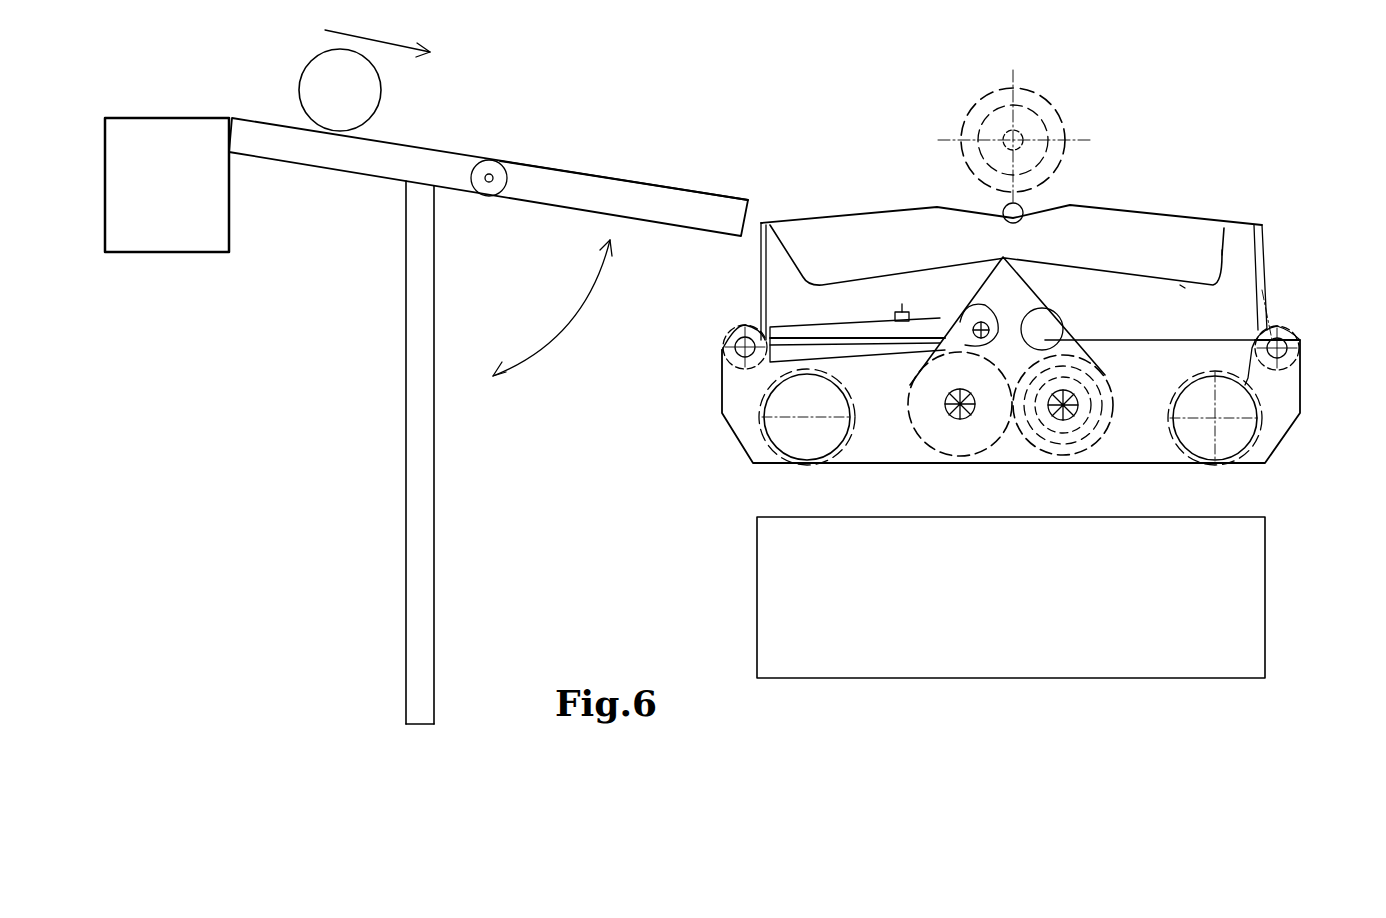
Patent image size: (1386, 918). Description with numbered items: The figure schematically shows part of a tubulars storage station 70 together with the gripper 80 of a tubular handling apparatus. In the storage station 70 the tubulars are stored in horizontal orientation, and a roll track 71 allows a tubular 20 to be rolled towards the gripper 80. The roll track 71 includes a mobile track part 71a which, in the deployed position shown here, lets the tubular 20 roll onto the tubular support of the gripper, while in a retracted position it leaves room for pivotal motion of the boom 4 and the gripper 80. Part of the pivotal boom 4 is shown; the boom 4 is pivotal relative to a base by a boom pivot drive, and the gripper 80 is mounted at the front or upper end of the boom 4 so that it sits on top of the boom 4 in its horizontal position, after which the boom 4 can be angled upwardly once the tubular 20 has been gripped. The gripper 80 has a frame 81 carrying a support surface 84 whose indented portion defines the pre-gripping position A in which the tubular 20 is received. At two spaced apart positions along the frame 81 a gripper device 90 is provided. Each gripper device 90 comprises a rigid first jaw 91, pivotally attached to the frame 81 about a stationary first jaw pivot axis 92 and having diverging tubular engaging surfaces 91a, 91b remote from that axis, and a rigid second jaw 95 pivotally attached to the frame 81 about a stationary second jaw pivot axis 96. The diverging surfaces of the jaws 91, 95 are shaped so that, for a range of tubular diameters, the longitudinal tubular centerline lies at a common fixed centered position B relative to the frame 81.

The pivotal boom 4 is at (1270, 600).
The tubular 20 is at (303, 72).
The tubulars storage station 70 is at (215, 314).
The roll track 71 is at (427, 160).
The mobile track part 71a is at (615, 188).
The gripper 80 is at (991, 412).
The frame 81 is at (1285, 388).
The support surface 84 is at (885, 213).
The gripper device 90 is at (1070, 243).
The rigid first jaw 91 is at (1137, 290).
The first tubular engaging surface of first jaw 91a is at (1180, 288).
The second tubular engaging surface of first jaw 91b is at (1222, 251).
The first jaw pivot axis 92 is at (957, 418).
The rigid second jaw 95 is at (800, 297).
The second jaw pivot axis 96 is at (1066, 418).
The pre-gripping position A is at (1072, 141).
The common fixed centered position B is at (1013, 140).